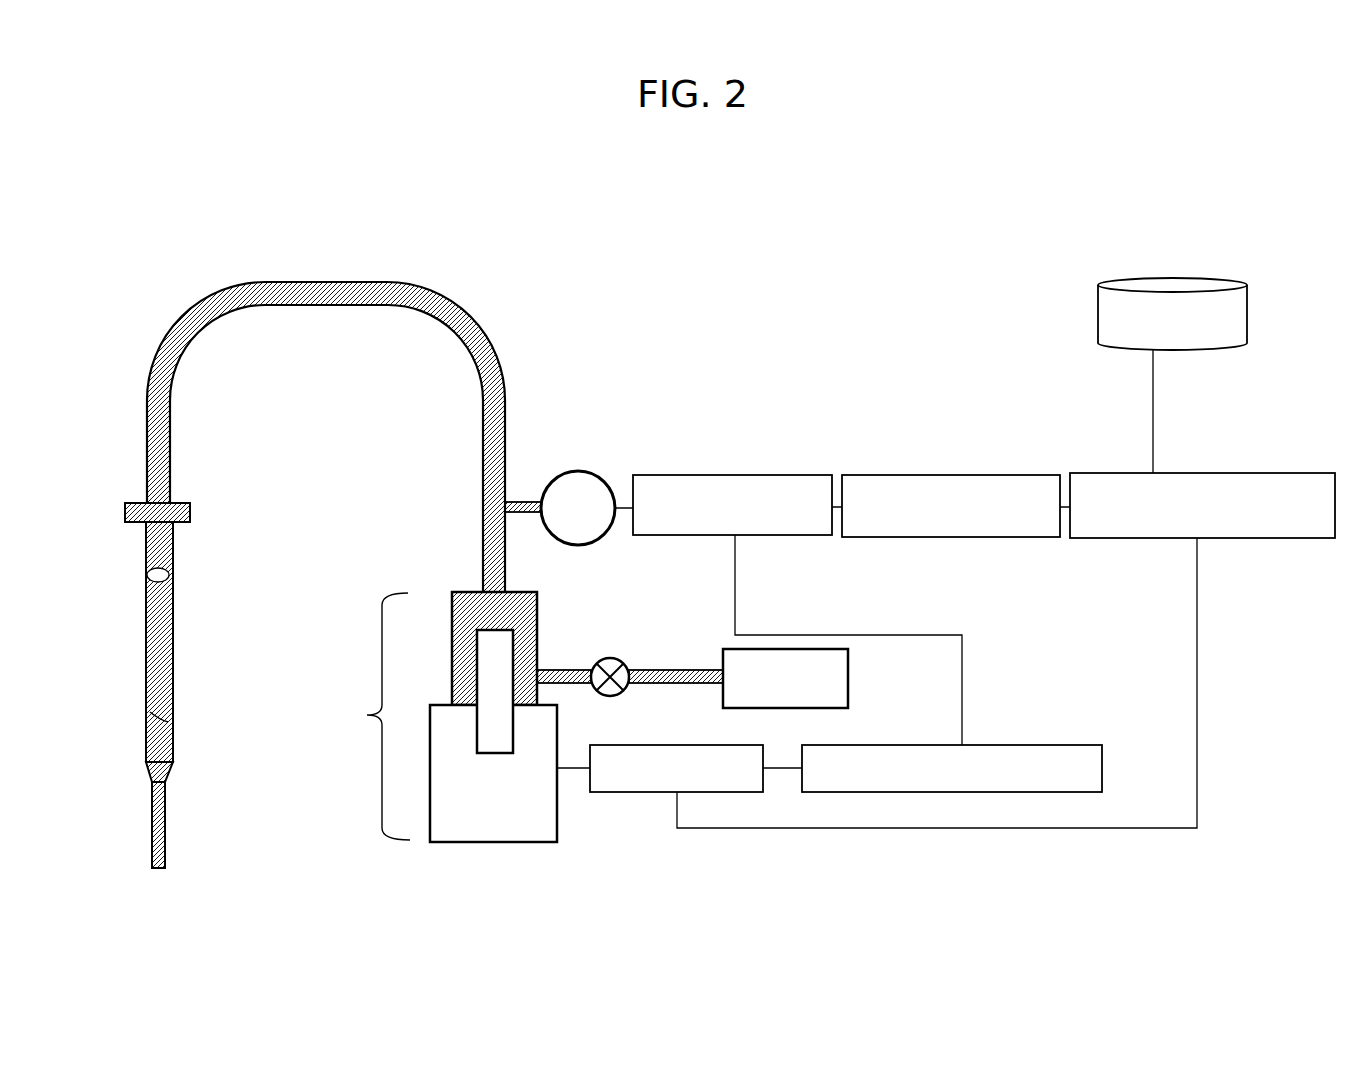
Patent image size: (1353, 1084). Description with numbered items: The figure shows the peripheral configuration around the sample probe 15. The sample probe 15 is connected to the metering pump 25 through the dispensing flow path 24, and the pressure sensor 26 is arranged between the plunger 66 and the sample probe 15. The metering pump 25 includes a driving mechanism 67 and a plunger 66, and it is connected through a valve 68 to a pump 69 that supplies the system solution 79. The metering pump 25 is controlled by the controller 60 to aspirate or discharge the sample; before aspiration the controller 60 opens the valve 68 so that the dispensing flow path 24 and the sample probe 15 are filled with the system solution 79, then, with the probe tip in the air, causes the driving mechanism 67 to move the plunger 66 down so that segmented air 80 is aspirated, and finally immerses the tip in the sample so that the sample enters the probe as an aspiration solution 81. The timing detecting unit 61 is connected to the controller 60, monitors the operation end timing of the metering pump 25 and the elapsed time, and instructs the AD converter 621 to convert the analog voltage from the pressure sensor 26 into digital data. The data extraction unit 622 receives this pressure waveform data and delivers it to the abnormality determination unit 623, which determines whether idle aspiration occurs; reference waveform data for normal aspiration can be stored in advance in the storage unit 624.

The sample probe 15 is at (142, 623).
The dispensing flow path 24 is at (365, 291).
The metering pump 25 is at (439, 713).
The pressure sensor 26 is at (578, 471).
The controller 60 is at (640, 793).
The timing detecting unit 61 is at (1047, 745).
The plunger 66 is at (493, 625).
The driving mechanism 67 is at (495, 827).
The valve 68 is at (610, 657).
The pump 69 is at (793, 648).
The system solution 79 is at (163, 430).
The segmented air 80 is at (175, 573).
The aspiration solution 81 is at (165, 720).
The AD converter 621 is at (705, 475).
The data extraction unit 622 is at (960, 475).
The abnormality determination unit 623 is at (1195, 473).
The storage unit 624 is at (1098, 305).